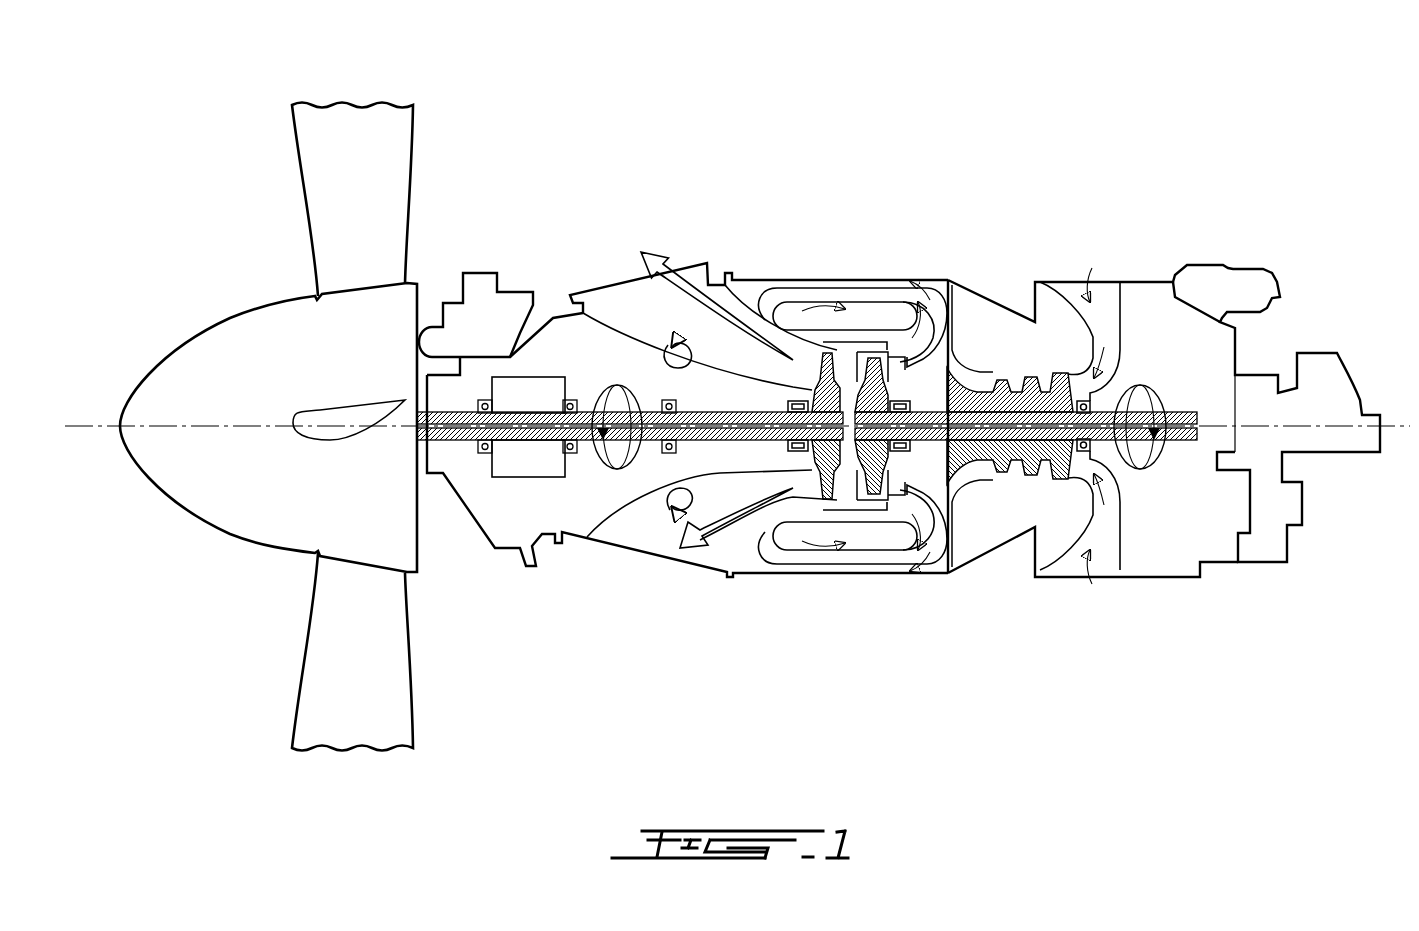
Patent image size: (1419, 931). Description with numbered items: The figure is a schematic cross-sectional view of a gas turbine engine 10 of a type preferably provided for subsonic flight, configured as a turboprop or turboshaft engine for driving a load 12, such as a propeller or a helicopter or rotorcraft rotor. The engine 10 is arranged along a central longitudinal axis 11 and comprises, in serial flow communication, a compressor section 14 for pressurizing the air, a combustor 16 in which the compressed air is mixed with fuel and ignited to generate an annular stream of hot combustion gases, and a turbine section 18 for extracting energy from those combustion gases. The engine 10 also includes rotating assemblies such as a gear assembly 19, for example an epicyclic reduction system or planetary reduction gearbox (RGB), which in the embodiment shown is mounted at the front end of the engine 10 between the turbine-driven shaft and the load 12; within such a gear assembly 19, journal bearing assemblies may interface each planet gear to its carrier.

The gas turbine engine 10 is at (1172, 128).
The central longitudinal axis 11 is at (93, 424).
The load 12 is at (325, 671).
The compressor section 14 is at (1042, 318).
The combustor 16 is at (883, 308).
The turbine section 18 is at (848, 350).
The gear assembly 19 is at (553, 377).